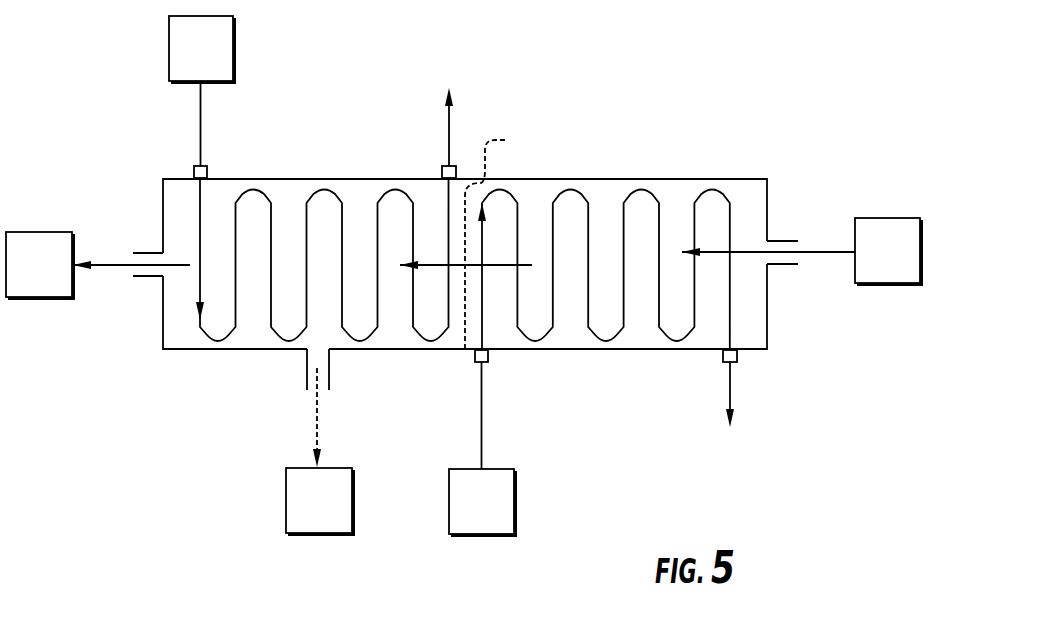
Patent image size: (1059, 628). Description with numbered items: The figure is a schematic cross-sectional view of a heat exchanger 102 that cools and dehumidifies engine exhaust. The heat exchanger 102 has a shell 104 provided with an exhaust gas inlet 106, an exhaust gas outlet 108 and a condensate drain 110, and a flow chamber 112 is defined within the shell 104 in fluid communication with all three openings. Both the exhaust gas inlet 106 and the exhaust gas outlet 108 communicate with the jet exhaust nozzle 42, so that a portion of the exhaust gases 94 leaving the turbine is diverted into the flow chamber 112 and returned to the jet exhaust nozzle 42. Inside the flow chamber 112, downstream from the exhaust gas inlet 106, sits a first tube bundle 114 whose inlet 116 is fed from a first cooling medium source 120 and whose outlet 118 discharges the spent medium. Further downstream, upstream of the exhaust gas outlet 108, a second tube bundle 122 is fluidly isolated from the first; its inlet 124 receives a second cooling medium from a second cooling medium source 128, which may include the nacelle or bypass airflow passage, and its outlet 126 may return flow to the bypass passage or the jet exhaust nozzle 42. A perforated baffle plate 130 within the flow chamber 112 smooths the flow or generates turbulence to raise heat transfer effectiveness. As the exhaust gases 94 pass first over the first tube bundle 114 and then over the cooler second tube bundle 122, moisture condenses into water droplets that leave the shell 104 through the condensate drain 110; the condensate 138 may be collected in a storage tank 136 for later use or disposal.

The jet exhaust nozzle 42 is at (51, 280).
The exhaust gases 94 is at (813, 255).
The heat exchanger 102 is at (757, 115).
The shell 104 is at (577, 179).
The exhaust gas inlet 106 is at (798, 244).
The exhaust gas outlet 108 is at (133, 268).
The condensate drain 110 is at (312, 392).
The flow chamber 112 is at (255, 335).
The first tube bundle 114 is at (658, 313).
The inlet 116 is at (475, 357).
The outlet 118 is at (737, 357).
The first cooling medium source 120 is at (500, 514).
The second tube bundle 122 is at (272, 227).
The inlet 124 is at (194, 172).
The outlet 126 is at (445, 166).
The second cooling medium source 128 is at (218, 60).
The baffle plate 130 is at (505, 238).
The storage tank 136 is at (336, 514).
The condensate 138 is at (320, 435).